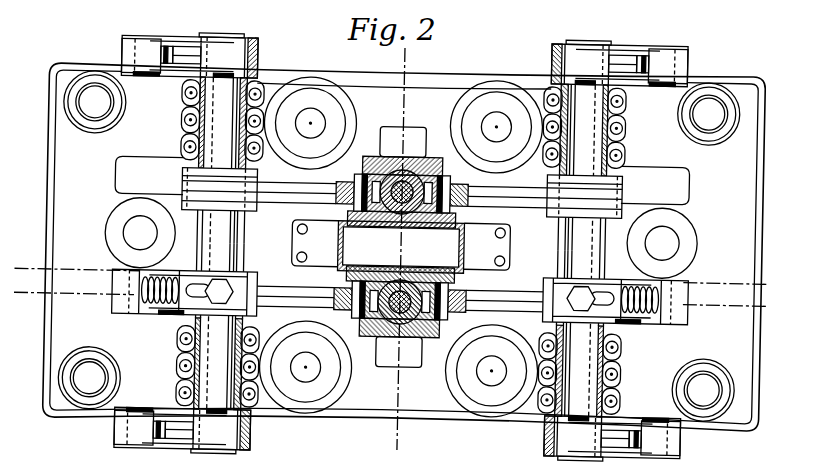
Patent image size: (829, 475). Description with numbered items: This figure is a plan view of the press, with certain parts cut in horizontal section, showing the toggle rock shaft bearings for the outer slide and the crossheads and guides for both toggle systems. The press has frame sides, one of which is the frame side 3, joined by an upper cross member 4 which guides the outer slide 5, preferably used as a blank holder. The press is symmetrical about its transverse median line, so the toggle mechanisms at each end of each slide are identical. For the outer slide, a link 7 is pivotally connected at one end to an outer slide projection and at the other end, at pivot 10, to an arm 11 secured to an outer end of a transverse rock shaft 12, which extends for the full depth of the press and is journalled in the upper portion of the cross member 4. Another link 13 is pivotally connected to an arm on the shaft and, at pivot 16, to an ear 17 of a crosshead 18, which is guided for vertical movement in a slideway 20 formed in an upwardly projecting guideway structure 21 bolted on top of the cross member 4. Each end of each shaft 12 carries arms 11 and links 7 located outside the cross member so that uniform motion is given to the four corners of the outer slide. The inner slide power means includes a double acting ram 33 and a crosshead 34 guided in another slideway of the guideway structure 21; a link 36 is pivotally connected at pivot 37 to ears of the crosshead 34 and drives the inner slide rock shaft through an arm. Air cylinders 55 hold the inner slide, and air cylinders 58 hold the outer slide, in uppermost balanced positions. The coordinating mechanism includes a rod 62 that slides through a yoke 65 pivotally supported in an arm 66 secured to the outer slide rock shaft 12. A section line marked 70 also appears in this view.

The frame side 3 is at (33, 260).
The upper cross member 4 is at (33, 287).
The outer slide 5 is at (388, 62).
The link 7 is at (178, 59).
The pivotal connection 10 is at (149, 44).
The arm 11 is at (167, 52).
The transverse rock shaft 12 is at (228, 245).
The link 13 is at (291, 190).
The pivotal connection 16 is at (354, 208).
The ear 17 is at (358, 186).
The crosshead 18 is at (376, 160).
The slideway 20 is at (427, 160).
The guideway structure 21 is at (331, 248).
The double acting ram 33 is at (378, 339).
The crosshead 34 is at (423, 339).
The link 36 is at (304, 290).
The pivotal connection 37 is at (342, 290).
The air cylinder 55 is at (334, 116).
The air cylinder 58 is at (112, 230).
The rod 62 is at (203, 290).
The yoke 65 is at (183, 315).
The arm 66 is at (181, 278).
The base plate 70 is at (501, 471).